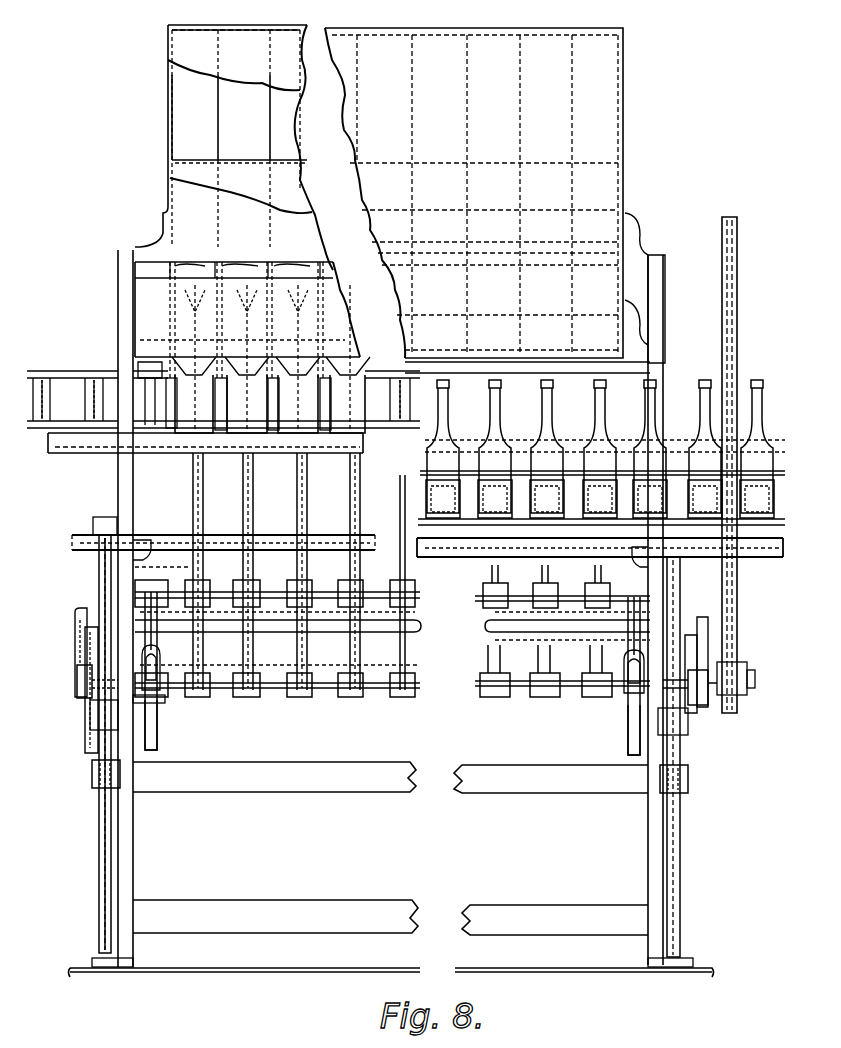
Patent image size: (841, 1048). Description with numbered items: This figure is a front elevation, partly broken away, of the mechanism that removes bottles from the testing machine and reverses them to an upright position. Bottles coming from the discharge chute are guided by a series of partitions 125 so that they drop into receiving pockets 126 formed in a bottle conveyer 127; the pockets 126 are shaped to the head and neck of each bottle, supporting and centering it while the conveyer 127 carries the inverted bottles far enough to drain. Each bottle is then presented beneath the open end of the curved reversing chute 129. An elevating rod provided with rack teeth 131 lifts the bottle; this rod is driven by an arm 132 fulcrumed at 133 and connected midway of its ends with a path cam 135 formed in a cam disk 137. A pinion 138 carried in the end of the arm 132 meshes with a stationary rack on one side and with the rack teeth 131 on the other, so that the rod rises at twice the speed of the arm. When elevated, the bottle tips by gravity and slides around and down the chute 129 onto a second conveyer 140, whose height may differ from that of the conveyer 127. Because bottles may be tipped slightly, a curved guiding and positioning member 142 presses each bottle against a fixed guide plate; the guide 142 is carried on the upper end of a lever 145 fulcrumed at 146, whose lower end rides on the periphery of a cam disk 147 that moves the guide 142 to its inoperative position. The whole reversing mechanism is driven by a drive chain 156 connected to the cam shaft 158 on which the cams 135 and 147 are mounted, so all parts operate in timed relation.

The partitions 125 is at (270, 135).
The curved reversing chute 129 is at (605, 143).
The curved guiding and positioning member 142 is at (152, 303).
The receiving pockets 126 is at (180, 394).
The bottle conveyer 127 is at (72, 373).
The second conveyer 140 is at (485, 487).
The drive chain 156 is at (737, 340).
The rack teeth 131 is at (302, 511).
The lever 145 is at (402, 517).
The fulcrum 146 is at (478, 594).
The fulcrum 133 is at (223, 620).
The cam shaft 158 is at (274, 674).
The pinion 138 is at (140, 703).
The cam disk 147 is at (157, 745).
The arm 132 is at (77, 698).
The cam disk 137 is at (88, 740).
The path cam 135 is at (87, 755).